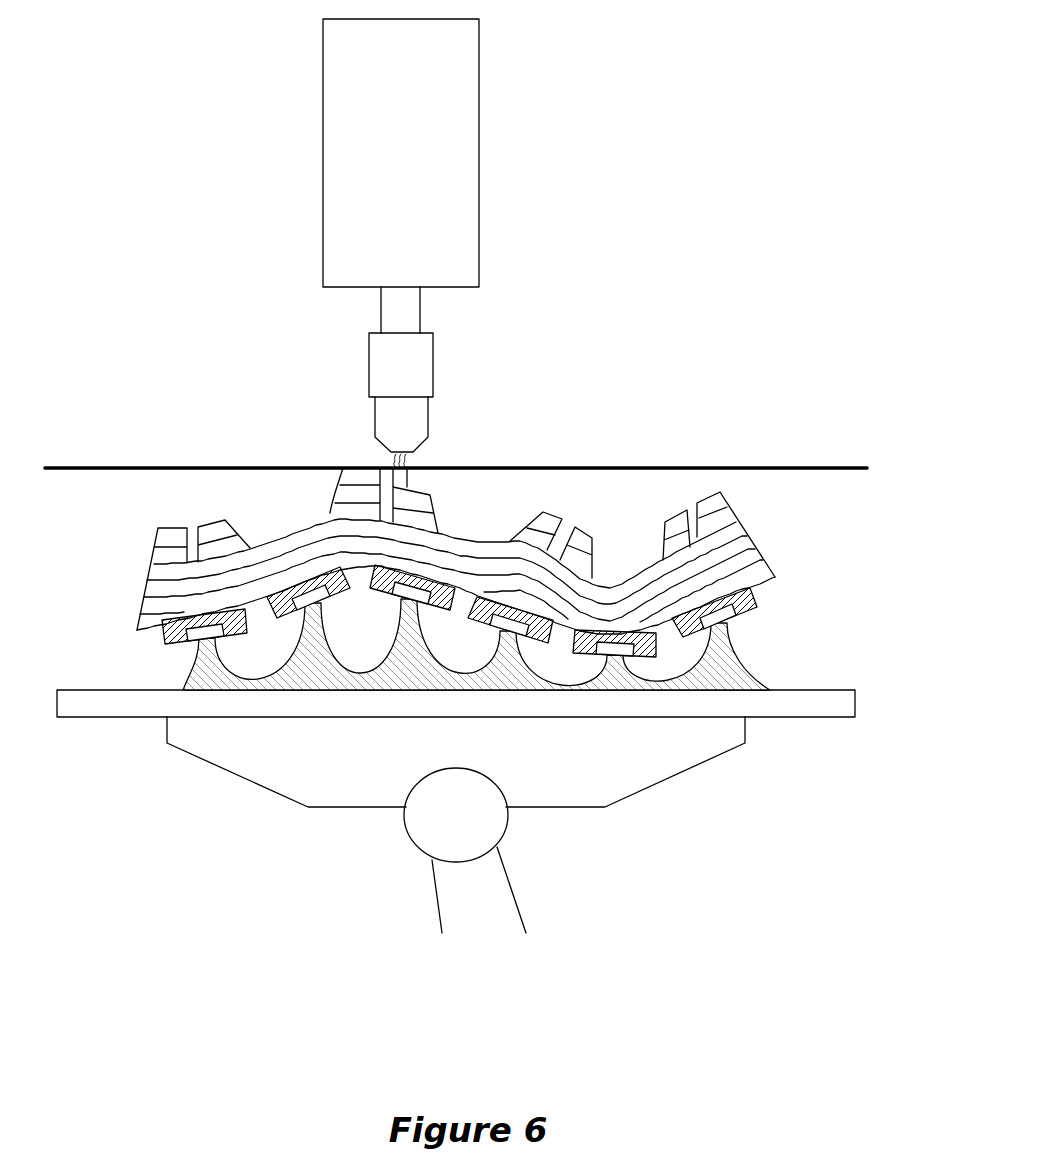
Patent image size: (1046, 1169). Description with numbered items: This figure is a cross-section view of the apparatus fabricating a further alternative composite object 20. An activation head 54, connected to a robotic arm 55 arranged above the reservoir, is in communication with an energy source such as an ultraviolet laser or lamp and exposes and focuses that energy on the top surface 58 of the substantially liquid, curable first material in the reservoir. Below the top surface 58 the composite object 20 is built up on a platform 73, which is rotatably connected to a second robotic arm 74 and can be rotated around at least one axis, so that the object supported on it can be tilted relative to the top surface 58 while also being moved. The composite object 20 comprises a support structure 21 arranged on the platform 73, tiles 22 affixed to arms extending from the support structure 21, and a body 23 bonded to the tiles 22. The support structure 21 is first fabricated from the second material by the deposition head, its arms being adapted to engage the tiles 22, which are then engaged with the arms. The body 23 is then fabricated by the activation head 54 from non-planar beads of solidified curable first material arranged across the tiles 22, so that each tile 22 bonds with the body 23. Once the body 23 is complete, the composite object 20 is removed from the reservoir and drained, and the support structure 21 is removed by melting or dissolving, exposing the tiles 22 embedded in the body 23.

The robotic arm 55 is at (336, 159).
The activation head 54 is at (379, 365).
The top surface 58 is at (853, 468).
The body 23 is at (737, 512).
The composite object 20 is at (519, 551).
The tiles 22 is at (745, 607).
The support structure 21 is at (730, 658).
The platform 73 is at (840, 707).
The second robotic arm 74 is at (490, 894).